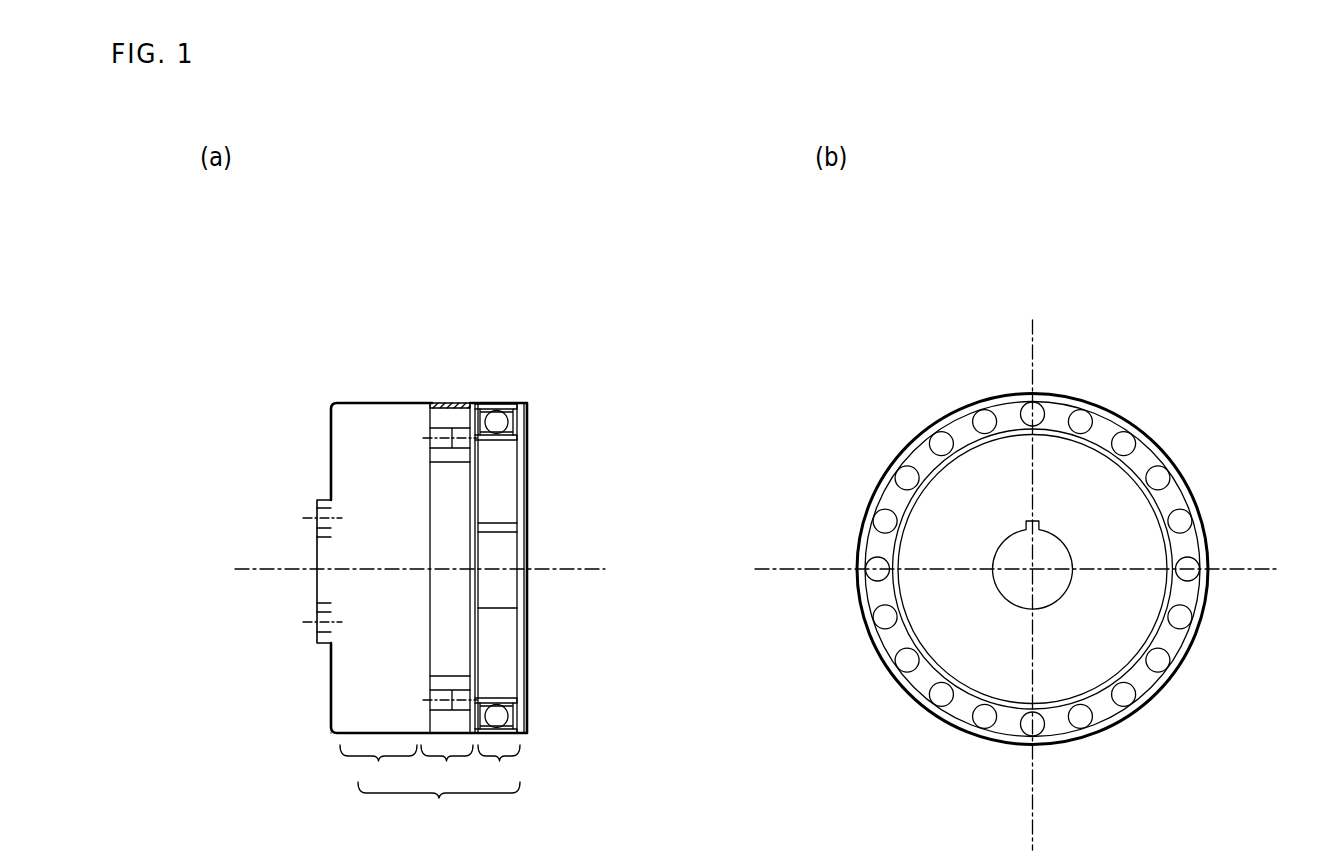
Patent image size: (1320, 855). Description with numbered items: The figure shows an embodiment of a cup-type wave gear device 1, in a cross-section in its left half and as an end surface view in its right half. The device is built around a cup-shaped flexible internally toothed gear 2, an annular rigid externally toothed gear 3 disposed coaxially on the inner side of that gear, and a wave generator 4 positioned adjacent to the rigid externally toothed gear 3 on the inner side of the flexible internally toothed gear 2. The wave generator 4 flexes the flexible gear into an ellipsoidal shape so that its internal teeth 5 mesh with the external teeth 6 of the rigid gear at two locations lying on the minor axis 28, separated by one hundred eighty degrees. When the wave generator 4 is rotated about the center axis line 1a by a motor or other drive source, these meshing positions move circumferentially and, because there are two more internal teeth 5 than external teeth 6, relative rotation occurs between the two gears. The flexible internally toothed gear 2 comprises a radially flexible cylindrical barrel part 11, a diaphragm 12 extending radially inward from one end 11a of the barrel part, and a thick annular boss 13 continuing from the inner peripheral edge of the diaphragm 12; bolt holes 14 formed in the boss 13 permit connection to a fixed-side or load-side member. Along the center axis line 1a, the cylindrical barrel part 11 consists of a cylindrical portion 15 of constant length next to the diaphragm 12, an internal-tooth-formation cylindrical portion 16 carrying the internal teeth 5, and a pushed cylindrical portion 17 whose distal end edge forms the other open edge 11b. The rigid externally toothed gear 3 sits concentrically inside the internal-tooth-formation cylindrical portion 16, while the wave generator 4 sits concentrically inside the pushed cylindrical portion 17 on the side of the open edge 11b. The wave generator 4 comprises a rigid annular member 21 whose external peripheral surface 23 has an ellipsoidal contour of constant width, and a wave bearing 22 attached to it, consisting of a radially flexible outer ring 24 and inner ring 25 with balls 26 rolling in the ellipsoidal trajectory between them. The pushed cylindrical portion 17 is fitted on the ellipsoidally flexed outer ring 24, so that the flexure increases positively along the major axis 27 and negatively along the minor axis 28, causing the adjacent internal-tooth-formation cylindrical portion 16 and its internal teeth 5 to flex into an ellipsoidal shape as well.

The cup-type wave gear device 1 is at (738, 539).
The center axis line 1a is at (250, 571).
The flexible internally toothed gear 2 is at (726, 567).
The rigid externally toothed gear 3 is at (422, 537).
The wave generator 4 is at (521, 488).
The internal teeth 5 is at (443, 407).
The external teeth 6 is at (450, 409).
The cylindrical barrel part 11 is at (421, 615).
The one end of the cylindrical barrel part 11a is at (331, 735).
The open edge 11b is at (527, 722).
The diaphragm 12 is at (331, 421).
The boss 13 is at (293, 562).
The bolt holes 14 is at (317, 521).
The cylindrical portion 15 is at (378, 767).
The internal-tooth-formation cylindrical portion 16 is at (447, 767).
The pushed cylindrical portion 17 is at (499, 767).
The rigid annular member 21 is at (512, 512).
The wave bearing 22 is at (551, 543).
The external peripheral surface 23 is at (494, 438).
The outer ring 24 is at (517, 409).
The inner ring 25 is at (506, 434).
The balls 26 is at (520, 416).
The major axis 27 is at (1272, 573).
The minor axis 28 is at (1036, 330).